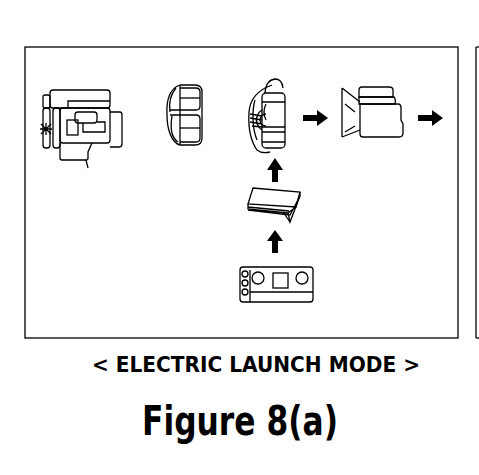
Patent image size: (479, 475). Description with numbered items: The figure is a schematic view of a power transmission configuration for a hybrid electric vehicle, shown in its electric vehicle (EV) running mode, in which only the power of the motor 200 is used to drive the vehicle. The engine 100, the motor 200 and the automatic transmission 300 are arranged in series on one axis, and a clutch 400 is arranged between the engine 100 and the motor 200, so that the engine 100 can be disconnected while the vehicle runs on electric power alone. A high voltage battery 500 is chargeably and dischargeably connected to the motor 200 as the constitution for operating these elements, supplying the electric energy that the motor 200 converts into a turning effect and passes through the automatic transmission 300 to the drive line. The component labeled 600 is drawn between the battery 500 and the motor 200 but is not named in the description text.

The engine 100 is at (87, 168).
The motor 200 is at (276, 90).
The automatic transmission 300 is at (375, 87).
The clutch 400 is at (183, 145).
The high voltage battery 500 is at (313, 278).
The battery 600 is at (300, 196).